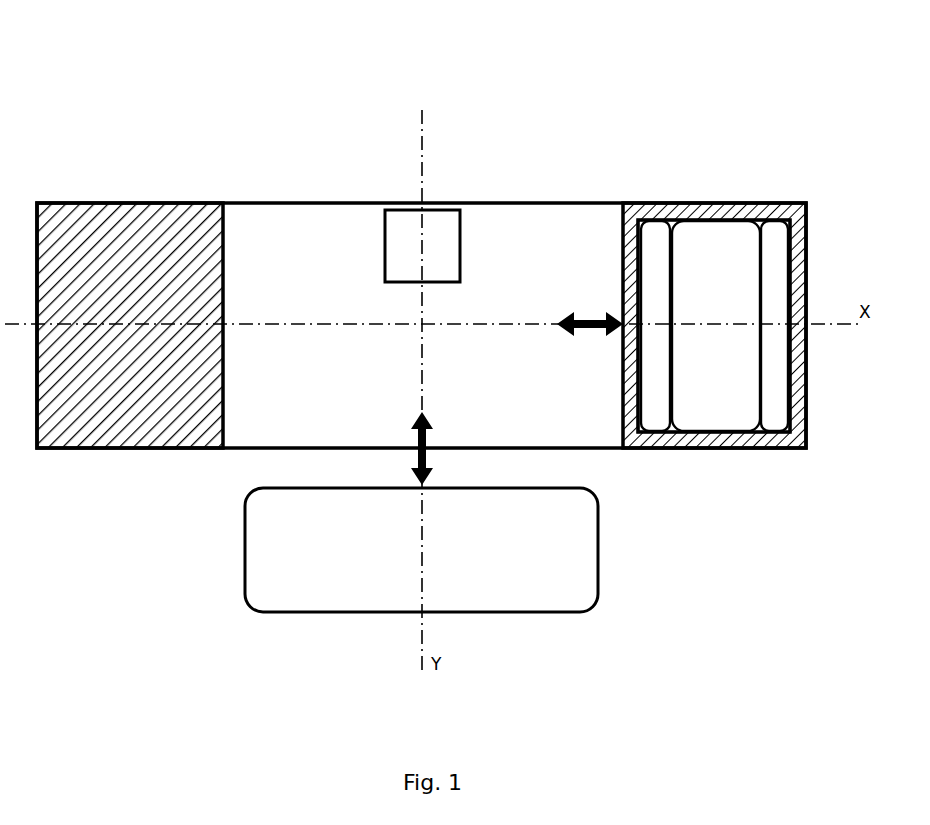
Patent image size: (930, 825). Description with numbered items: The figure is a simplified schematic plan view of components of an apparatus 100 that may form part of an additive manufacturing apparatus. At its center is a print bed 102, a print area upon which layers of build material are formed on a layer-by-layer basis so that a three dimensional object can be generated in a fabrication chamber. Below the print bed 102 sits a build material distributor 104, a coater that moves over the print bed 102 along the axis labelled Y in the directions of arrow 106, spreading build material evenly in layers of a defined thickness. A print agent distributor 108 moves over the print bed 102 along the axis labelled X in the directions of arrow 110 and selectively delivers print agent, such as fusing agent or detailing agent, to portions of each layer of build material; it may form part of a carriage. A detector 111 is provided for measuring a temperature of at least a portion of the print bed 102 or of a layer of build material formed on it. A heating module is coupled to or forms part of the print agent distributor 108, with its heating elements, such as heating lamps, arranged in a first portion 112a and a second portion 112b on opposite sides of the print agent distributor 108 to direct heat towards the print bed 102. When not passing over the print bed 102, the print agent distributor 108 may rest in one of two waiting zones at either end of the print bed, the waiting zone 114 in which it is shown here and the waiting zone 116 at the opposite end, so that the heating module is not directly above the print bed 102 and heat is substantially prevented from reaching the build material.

The apparatus 100 is at (622, 70).
The print bed 102 is at (252, 228).
The build material distributor 104 is at (275, 596).
The arrow 106 is at (436, 448).
The print agent distributor 108 is at (718, 420).
The arrow 110 is at (590, 314).
The detector 111 is at (444, 240).
The first portion 112a is at (652, 420).
The second portion 112b is at (783, 420).
The waiting zone 114 is at (800, 203).
The waiting zone 116 is at (72, 228).